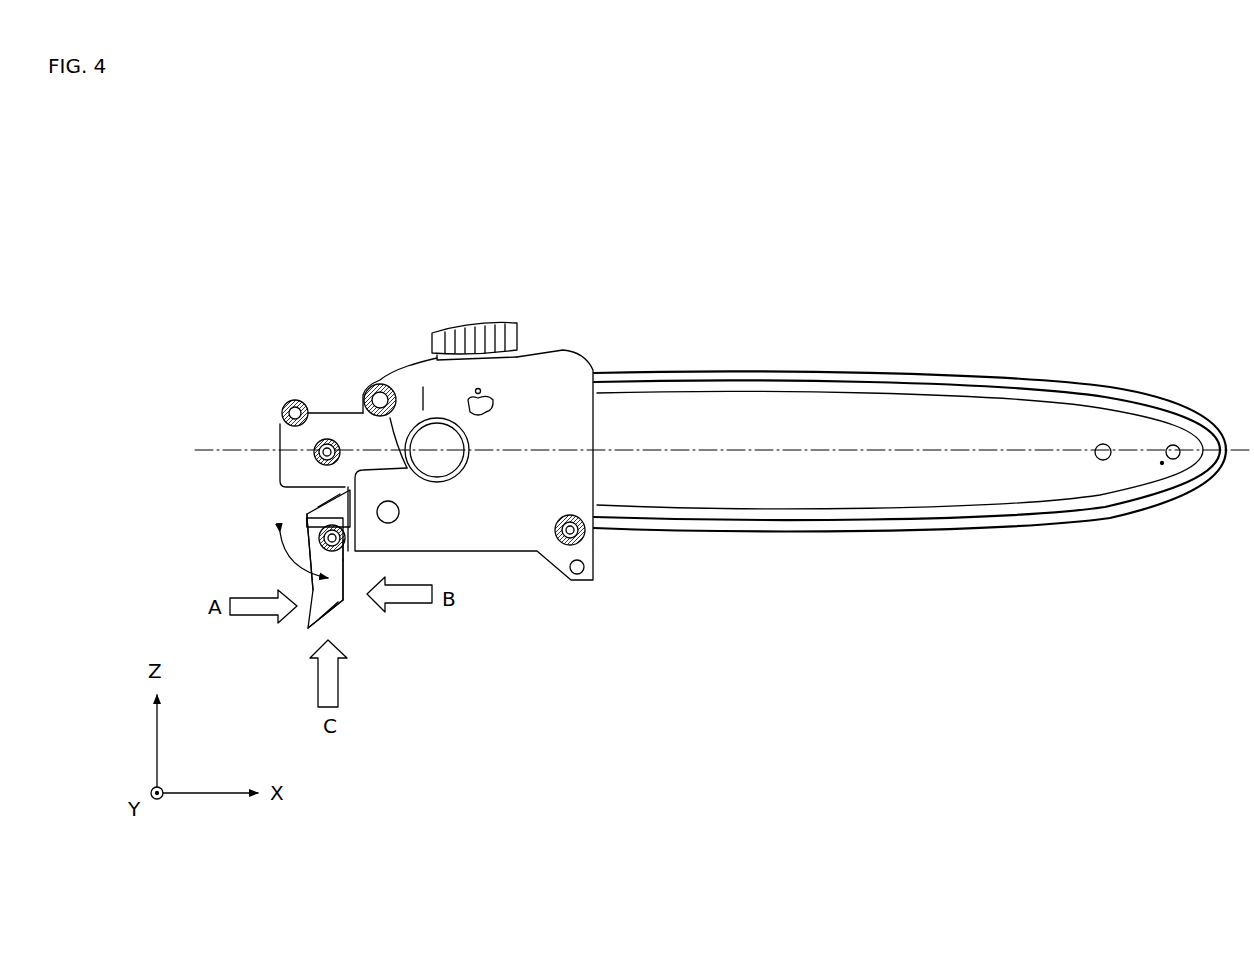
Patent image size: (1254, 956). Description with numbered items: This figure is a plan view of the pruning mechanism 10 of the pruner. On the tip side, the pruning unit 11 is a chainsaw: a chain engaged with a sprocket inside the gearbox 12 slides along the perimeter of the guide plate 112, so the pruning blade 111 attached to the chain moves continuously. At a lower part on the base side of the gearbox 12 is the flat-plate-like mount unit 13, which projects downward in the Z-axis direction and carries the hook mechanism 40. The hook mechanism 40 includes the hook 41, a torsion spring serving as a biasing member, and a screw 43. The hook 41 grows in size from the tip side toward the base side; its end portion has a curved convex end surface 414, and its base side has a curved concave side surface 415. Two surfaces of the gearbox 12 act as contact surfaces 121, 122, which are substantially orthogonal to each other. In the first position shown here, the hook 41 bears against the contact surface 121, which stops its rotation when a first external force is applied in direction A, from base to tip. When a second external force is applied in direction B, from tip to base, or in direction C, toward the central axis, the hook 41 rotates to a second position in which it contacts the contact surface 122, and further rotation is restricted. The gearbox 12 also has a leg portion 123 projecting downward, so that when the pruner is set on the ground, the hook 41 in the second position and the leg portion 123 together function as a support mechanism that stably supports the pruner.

The pruning mechanism 10 is at (880, 288).
The pruning unit 11 is at (950, 335).
The pruning blade 111 is at (1156, 402).
The guide plate 112 is at (1061, 418).
The gearbox 12 is at (538, 355).
The contact surface 121 is at (345, 496).
The contact surface 122 is at (317, 512).
The leg portion 123 is at (577, 580).
The mount unit 13 is at (307, 522).
The hook mechanism 40 is at (296, 636).
The hook 41 is at (345, 602).
The screw 43 is at (347, 552).
The curved convex end surface 414 is at (337, 613).
The curved concave side surface 415 is at (313, 583).